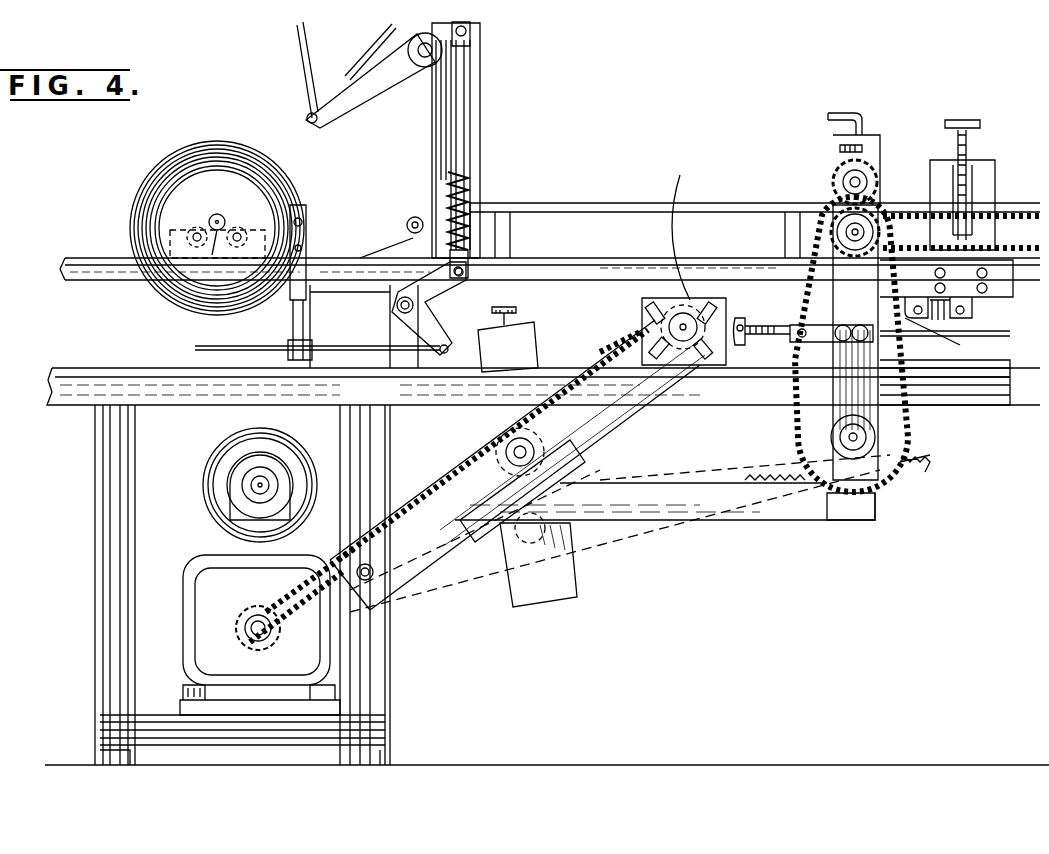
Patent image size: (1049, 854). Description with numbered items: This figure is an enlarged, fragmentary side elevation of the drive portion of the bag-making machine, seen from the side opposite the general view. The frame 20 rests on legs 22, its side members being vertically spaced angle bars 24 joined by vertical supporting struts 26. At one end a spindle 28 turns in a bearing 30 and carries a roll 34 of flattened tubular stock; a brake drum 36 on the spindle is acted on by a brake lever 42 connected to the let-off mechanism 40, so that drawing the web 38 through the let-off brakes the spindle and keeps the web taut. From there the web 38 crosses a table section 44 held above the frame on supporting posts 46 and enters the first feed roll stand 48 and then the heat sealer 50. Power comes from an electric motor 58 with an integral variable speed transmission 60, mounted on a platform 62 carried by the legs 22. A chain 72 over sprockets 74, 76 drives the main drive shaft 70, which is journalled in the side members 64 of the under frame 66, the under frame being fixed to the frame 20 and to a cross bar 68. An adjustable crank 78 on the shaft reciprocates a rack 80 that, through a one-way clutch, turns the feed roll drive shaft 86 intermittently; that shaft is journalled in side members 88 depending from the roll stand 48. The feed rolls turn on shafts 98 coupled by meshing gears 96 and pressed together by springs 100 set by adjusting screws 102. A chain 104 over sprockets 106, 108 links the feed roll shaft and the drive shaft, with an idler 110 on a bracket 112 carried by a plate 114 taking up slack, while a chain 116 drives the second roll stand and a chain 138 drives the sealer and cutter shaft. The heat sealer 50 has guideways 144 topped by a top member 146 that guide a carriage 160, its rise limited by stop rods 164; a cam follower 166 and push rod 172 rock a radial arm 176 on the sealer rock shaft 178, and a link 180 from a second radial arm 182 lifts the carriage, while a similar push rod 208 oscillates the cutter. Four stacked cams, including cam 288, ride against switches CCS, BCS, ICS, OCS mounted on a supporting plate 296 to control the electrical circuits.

The frame 20 is at (975, 412).
The legs 22 is at (100, 466).
The angle bars 24 is at (582, 258).
The vertical supporting struts 26 is at (306, 328).
The spindles 28 is at (225, 220).
The bearings 30 is at (150, 240).
The rolls 34 is at (293, 185).
The brake drum 36 is at (155, 200).
The web 38 is at (392, 240).
The let-off mechanism 40 is at (495, 60).
The brake levers 42 is at (292, 305).
The table section 44 is at (592, 206).
The supporting posts 46 is at (508, 236).
The first feed roll stand 48 is at (816, 116).
The heat sealer 50 is at (993, 127).
The electric motor 58 is at (215, 456).
The variable speed transmission 60 is at (186, 606).
The platform 62 is at (170, 715).
The side members 64 is at (426, 490).
The under frame 66 is at (782, 532).
The cross bar 68 is at (380, 582).
The main drive shaft 70 is at (560, 462).
The chain 72 is at (332, 552).
The sprocket 74 is at (276, 614).
The sprocket 76 is at (490, 455).
The adjustable crank 78 is at (572, 556).
The rack 80 is at (765, 478).
The feed roll drive shaft 86 is at (880, 478).
The side members 88 is at (876, 496).
The meshing gears 96 is at (872, 162).
The shafts 98 is at (848, 182).
The springs 100 is at (838, 149).
The adjusting screws 102 is at (846, 112).
The chain 104 is at (895, 352).
The sprocket 106 is at (835, 208).
The sprocket 108 is at (892, 436).
The idler 110 is at (800, 343).
The bracket 112 is at (838, 305).
The plate 114 is at (895, 385).
The chain 116 is at (1020, 204).
The chain 138 is at (622, 346).
The guideways 144 is at (996, 180).
The top member 146 is at (950, 158).
The carriage 160 is at (968, 245).
The stop rods 164 is at (968, 230).
The cam follower 166 is at (738, 344).
The push rod 172 is at (768, 334).
The radial arm 176 is at (925, 325).
The sealer rock shaft 178 is at (906, 300).
The link 180 is at (972, 310).
The radial arm 182 is at (995, 336).
The push rod 208 is at (1010, 340).
The rotating cam 288 is at (708, 172).
The supporting plate 296 is at (642, 302).
The cam-controlled switch CCS is at (655, 300).
The cam-controlled switch OCS is at (718, 300).
The cam-controlled switch BCS is at (660, 365).
The cam-controlled switch ICS is at (700, 365).